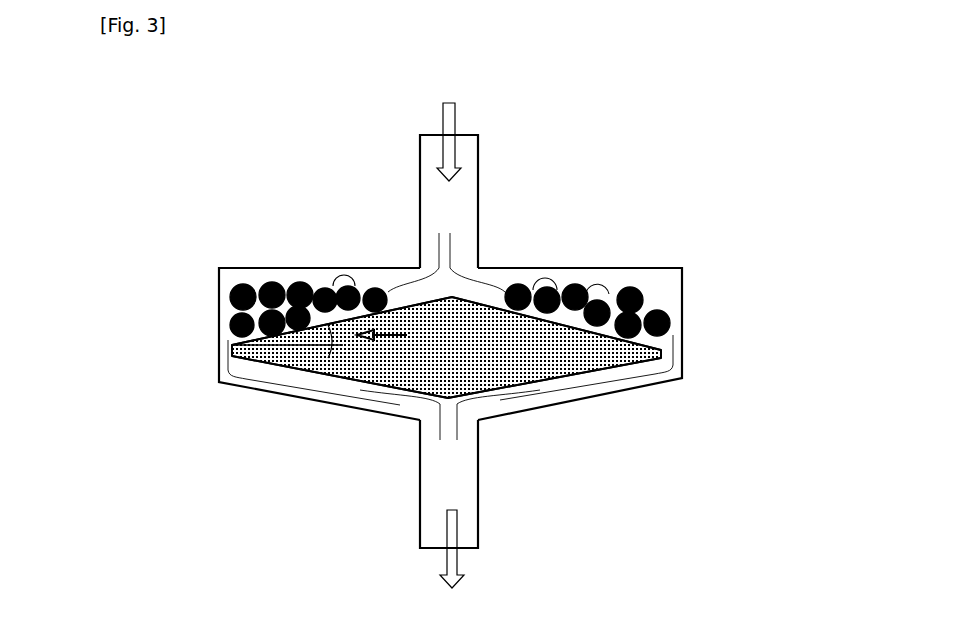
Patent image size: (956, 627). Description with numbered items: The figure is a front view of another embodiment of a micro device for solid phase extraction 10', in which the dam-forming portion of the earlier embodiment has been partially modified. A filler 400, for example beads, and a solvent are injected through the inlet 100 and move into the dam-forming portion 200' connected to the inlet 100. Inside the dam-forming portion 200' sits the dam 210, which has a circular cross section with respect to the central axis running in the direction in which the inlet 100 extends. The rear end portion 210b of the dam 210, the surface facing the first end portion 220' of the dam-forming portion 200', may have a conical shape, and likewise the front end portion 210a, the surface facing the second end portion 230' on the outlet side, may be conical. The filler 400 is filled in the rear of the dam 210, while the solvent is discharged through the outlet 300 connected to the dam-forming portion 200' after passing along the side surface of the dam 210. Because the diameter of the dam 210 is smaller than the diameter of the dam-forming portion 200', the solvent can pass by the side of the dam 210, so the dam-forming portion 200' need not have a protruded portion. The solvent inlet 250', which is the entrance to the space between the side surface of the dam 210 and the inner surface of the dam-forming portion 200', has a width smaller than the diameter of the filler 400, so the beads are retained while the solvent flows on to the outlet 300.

The micro device for solid phase extraction 10' is at (449, 345).
The inlet 100 is at (429, 148).
The dam-forming portion 200' is at (405, 344).
The dam 210 is at (585, 346).
The front end portion of the dam 210a is at (348, 382).
The rear end portion of the dam 210b is at (500, 292).
The first end portion of the dam-forming portion 220' is at (492, 241).
The second end portion of the dam-forming portion 230' is at (309, 404).
The solvent inlet 250' is at (635, 354).
The outlet 300 is at (479, 477).
The filler 400 is at (262, 286).